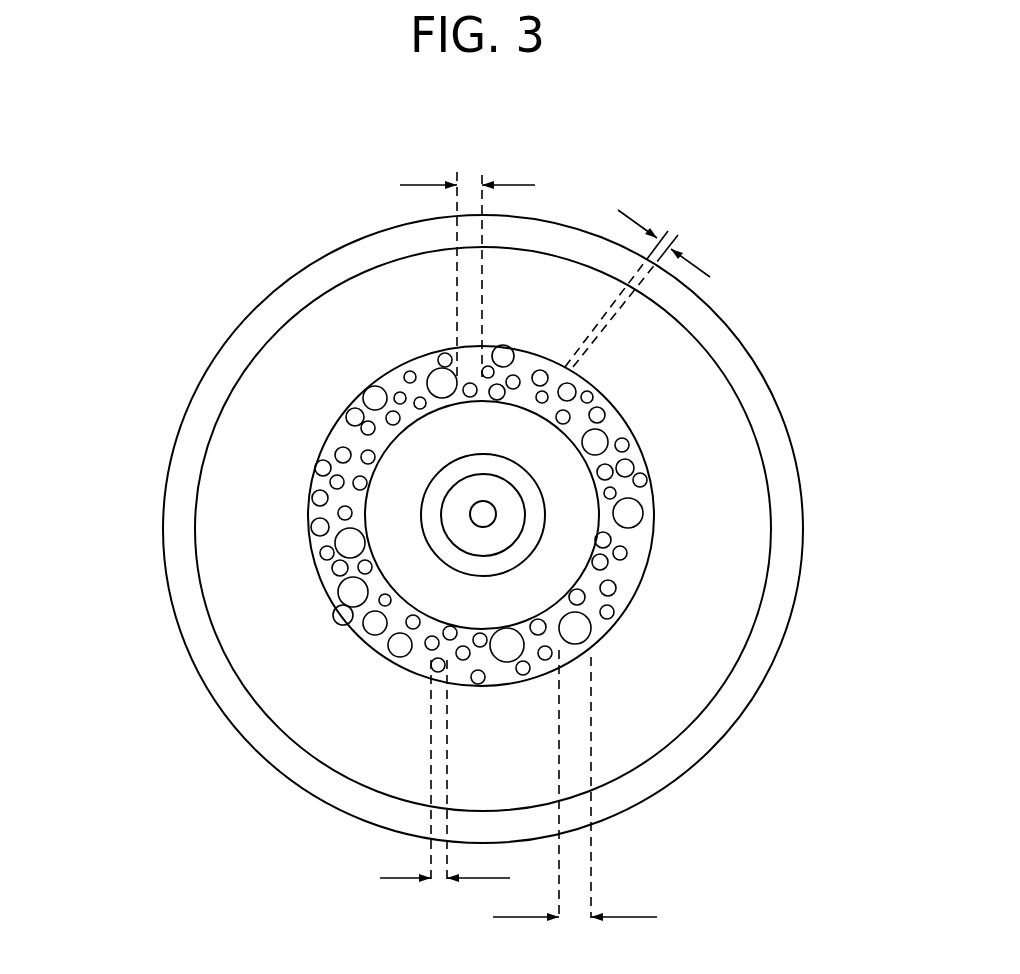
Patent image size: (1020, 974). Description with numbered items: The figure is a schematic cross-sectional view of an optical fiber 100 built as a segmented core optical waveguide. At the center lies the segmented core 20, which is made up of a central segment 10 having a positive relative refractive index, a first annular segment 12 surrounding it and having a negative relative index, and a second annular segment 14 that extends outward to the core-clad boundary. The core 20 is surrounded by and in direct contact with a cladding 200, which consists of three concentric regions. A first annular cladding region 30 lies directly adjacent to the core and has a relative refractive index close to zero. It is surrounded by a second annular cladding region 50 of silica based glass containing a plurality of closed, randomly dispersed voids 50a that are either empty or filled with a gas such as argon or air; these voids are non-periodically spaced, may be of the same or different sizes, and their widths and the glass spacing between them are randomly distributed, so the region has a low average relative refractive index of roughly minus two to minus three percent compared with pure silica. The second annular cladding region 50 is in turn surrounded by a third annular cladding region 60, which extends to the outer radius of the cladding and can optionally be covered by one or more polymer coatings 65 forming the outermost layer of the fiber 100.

The optical fiber 100 is at (236, 283).
The polymer coating 65 is at (735, 350).
The third annular cladding region 60 is at (752, 558).
The second annular cladding region 50 is at (632, 562).
The voids 50a is at (628, 518).
The first annular cladding region 30 is at (565, 572).
The cladding layer 200 is at (860, 552).
The segmented core 20 is at (92, 468).
The central segment 10 is at (482, 512).
The first annular segment 12 is at (458, 529).
The second annular segment 14 is at (442, 543).